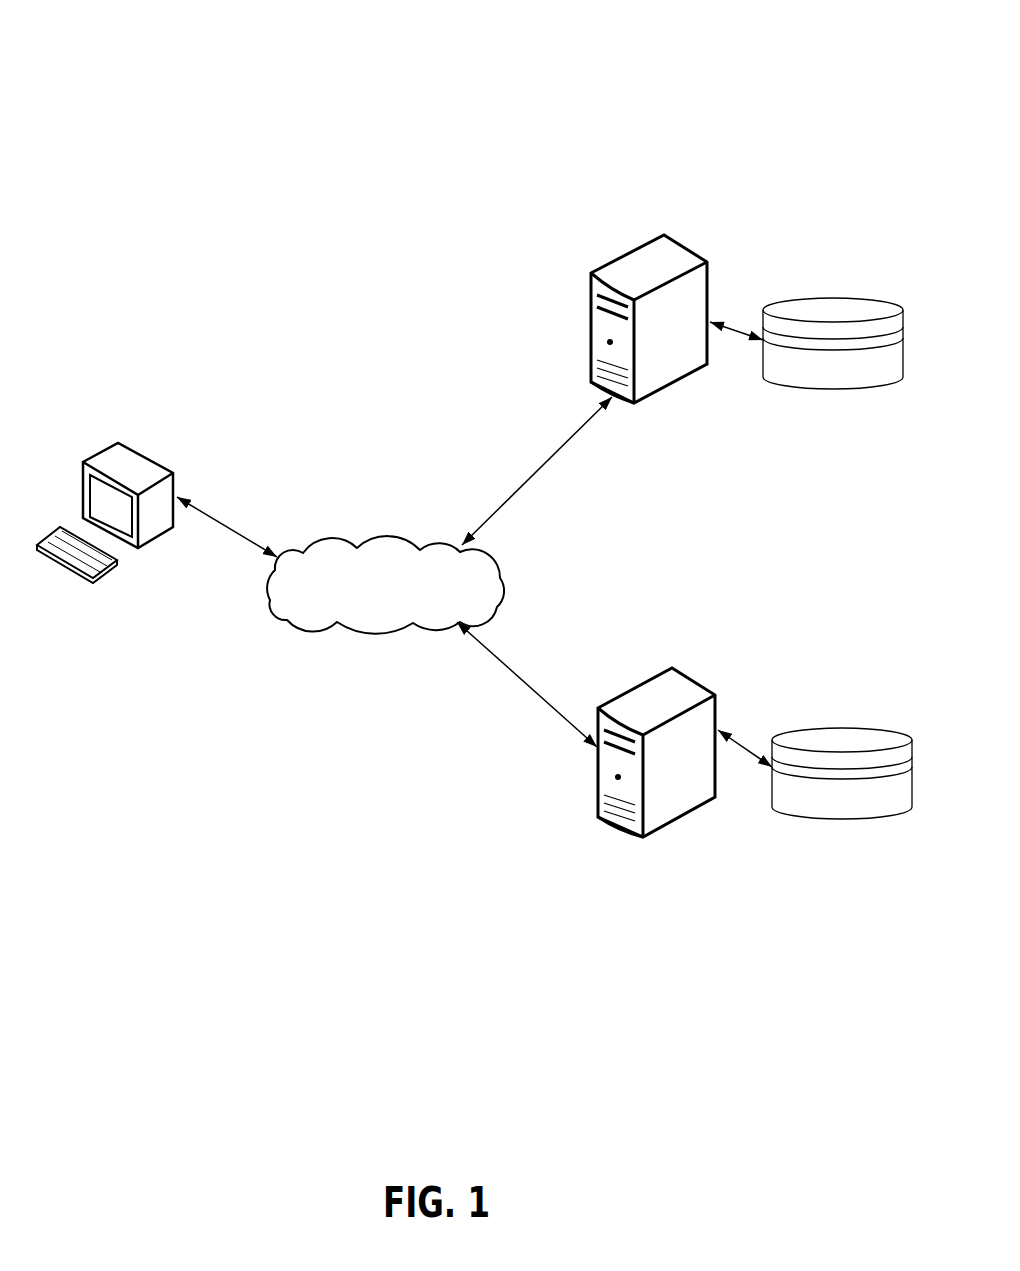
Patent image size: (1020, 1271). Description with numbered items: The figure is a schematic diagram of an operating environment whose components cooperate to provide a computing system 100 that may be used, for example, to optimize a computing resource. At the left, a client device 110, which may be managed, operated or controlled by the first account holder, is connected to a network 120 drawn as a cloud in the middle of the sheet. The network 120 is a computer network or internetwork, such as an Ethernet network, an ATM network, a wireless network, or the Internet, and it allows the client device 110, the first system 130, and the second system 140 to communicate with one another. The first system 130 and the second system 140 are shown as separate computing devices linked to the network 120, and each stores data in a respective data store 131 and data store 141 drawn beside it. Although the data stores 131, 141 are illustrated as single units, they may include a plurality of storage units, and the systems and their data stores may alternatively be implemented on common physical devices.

The computing system 100 is at (727, 50).
The client device 110 is at (163, 468).
The network 120 is at (405, 596).
The first system 130 is at (613, 262).
The data store 131 is at (838, 302).
The second system 140 is at (692, 680).
The data store 141 is at (843, 728).